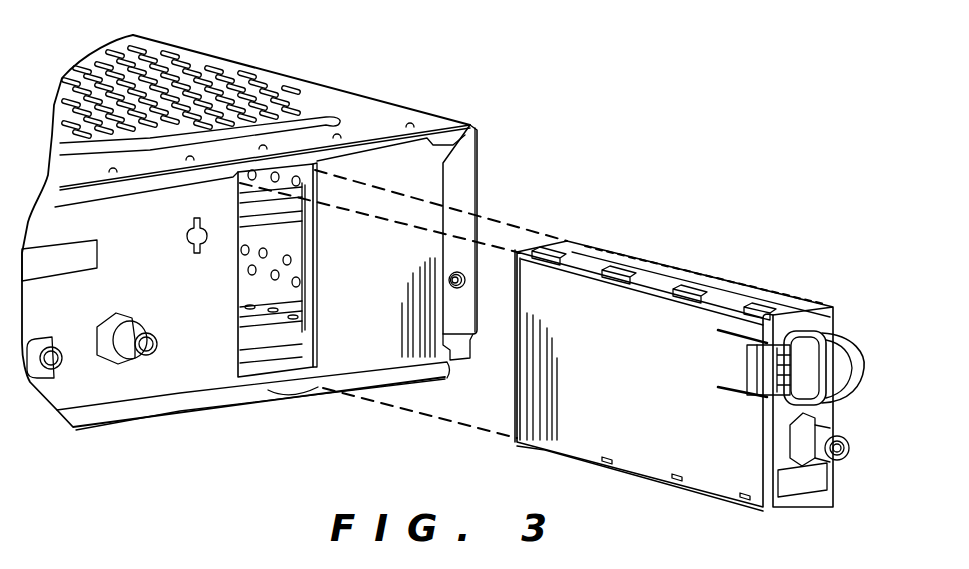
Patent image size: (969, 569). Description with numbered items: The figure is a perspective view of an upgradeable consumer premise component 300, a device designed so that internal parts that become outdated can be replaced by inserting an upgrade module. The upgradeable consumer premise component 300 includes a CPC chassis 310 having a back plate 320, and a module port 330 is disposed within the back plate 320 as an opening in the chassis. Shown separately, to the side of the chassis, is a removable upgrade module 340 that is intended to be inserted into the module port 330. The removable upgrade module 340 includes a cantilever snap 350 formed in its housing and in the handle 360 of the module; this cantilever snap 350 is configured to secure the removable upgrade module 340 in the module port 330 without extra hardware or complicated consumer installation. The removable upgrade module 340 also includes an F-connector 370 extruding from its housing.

The upgradeable consumer premise component 300 is at (310, 527).
The CPC chassis 310 is at (331, 72).
The back plate 320 is at (167, 287).
The module port 330 is at (319, 271).
The removable upgrade module 340 is at (632, 379).
The cantilever snap 350 is at (755, 367).
The handle 360 is at (842, 343).
The F-connector 370 is at (836, 460).